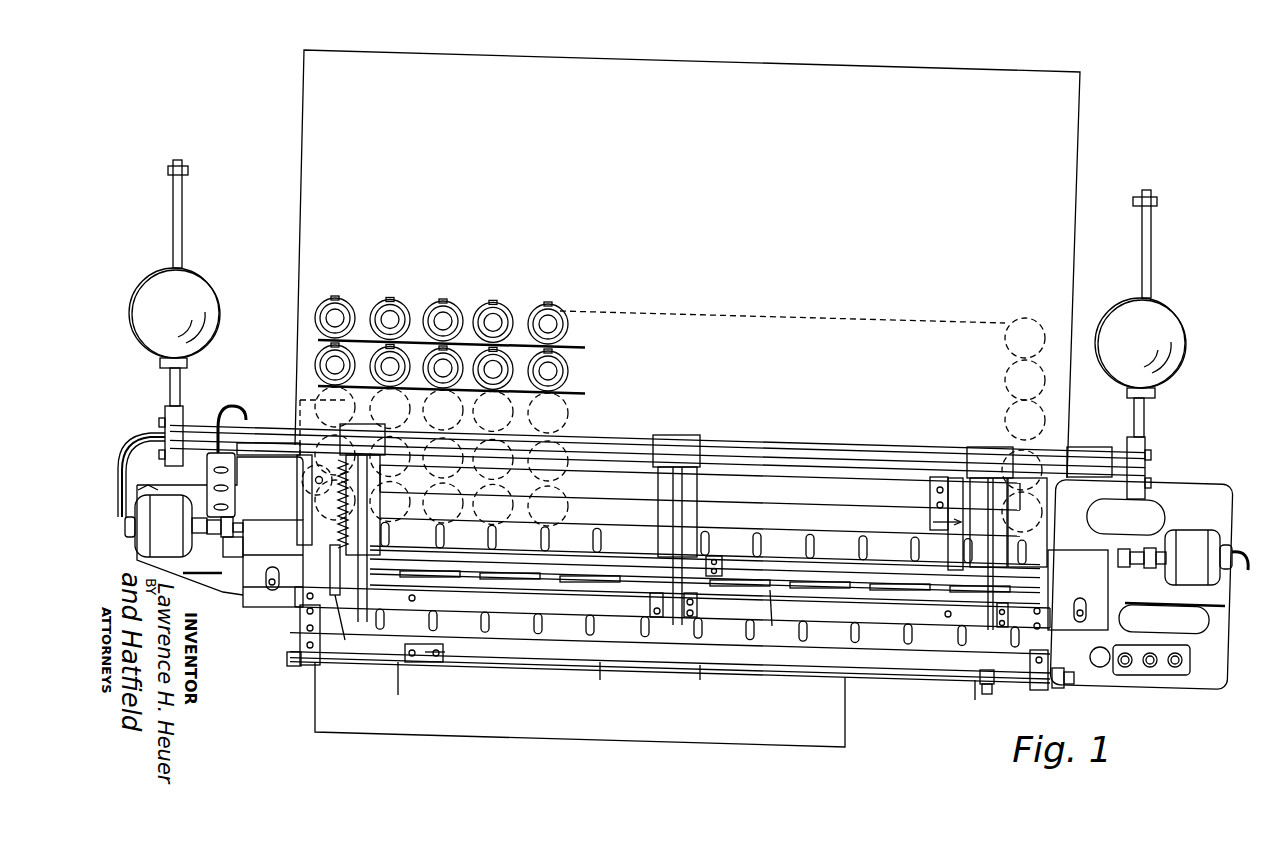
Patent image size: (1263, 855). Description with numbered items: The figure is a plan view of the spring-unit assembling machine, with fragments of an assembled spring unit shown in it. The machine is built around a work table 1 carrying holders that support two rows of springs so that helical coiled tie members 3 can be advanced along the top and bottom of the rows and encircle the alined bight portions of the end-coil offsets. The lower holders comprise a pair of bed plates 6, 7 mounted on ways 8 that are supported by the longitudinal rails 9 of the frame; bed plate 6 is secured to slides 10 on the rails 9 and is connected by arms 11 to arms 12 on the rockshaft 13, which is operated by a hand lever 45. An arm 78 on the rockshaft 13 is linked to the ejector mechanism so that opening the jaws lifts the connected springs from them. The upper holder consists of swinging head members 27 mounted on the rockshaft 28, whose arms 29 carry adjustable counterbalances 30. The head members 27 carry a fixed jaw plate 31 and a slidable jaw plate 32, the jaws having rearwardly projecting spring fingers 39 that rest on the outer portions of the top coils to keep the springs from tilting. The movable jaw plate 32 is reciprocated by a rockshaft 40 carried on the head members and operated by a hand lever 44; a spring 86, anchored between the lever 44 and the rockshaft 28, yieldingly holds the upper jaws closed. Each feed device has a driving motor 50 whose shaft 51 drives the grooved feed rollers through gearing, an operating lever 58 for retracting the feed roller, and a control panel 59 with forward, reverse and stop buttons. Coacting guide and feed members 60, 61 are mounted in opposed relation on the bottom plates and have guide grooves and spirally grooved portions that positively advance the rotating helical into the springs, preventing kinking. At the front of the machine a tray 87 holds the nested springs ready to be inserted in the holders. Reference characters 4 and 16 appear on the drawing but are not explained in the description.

The work table 1 is at (1067, 262).
The helical coiled tie members 3 is at (575, 346).
The feed track 4 is at (398, 695).
The bed plate 6 is at (333, 404).
The bed plate 7 is at (620, 535).
The ways 8 is at (938, 497).
The longitudinal rails 9 is at (752, 496).
The slides 10 is at (955, 478).
The arms 11 is at (292, 640).
The arms 12 is at (287, 662).
The rockshaft 13 is at (700, 686).
The rod 16 is at (975, 700).
The head members 27 is at (658, 490).
The rockshaft 28 is at (725, 442).
The arms 29 is at (182, 388).
The adjustable counterbalances 30 is at (212, 296).
The jaw plate 31 is at (817, 613).
The jaw plate 32 is at (838, 566).
The spring fingers 39 is at (812, 535).
The rockshaft 40 is at (718, 560).
The hand lever 44 is at (348, 593).
The hand lever 45 is at (1074, 690).
The driving motor 50 is at (150, 517).
The shafts 51 is at (216, 534).
The operating lever 58 is at (278, 606).
The control panel 59 is at (237, 487).
The guide and feed member 60 is at (772, 592).
The guide and feed member 61 is at (775, 576).
The arm 78 is at (985, 696).
The spring 86 is at (333, 515).
The tray 87 is at (835, 745).